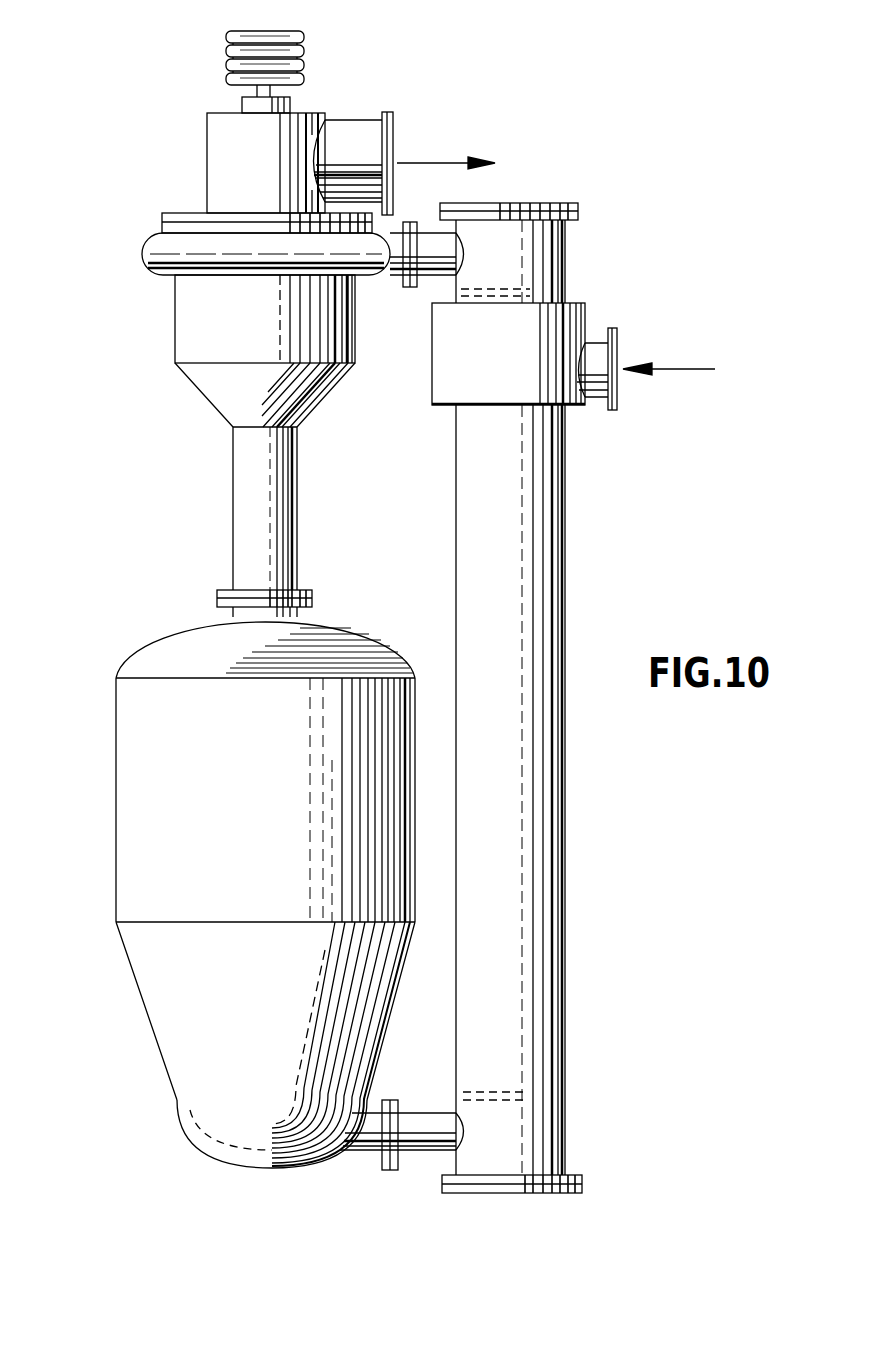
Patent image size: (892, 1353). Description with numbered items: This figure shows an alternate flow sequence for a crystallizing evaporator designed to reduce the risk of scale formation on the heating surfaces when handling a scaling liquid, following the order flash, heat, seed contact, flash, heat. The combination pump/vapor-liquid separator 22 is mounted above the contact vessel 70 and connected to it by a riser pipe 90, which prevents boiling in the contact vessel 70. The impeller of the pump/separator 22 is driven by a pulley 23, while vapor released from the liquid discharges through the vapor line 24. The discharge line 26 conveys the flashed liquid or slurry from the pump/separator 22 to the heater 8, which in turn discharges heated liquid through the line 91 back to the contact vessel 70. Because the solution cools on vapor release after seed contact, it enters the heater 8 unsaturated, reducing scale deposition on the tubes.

The heater 8 is at (560, 578).
The pump/separator 22 is at (188, 307).
The pulley 23 is at (240, 47).
The vapor discharge line 24 is at (346, 130).
The discharge line 26 is at (441, 270).
The contact vessel 70 is at (138, 765).
The riser pipe 90 is at (243, 492).
The line 91 is at (435, 1152).